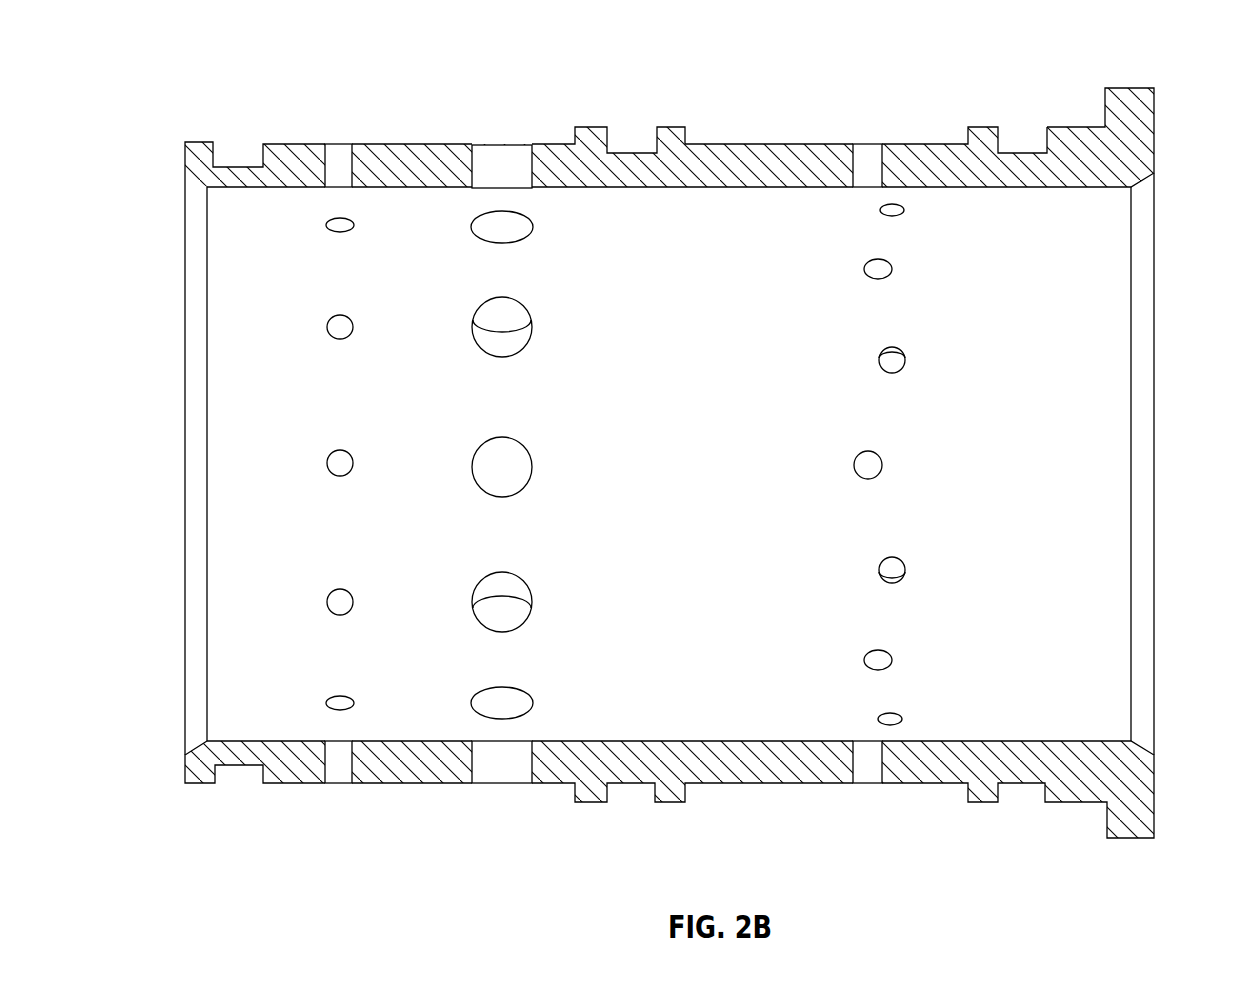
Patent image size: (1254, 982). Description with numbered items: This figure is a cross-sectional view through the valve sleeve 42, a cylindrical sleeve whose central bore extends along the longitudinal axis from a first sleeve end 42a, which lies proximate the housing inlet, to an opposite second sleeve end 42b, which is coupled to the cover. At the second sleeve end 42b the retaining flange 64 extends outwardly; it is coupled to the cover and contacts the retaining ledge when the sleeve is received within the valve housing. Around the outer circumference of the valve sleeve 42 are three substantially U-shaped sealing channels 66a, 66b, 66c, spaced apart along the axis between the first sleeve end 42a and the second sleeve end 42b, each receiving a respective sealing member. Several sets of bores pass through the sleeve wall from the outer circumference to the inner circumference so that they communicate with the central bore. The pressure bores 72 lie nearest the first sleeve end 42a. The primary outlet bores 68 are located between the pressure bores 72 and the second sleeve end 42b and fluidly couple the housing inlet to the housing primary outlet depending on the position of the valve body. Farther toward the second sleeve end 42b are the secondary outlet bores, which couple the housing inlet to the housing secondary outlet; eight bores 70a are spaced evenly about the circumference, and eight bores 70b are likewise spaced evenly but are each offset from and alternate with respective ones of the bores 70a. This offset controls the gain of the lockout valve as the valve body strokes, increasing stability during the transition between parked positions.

The valve sleeve 42 is at (233, 69).
The first sleeve end 42a is at (195, 766).
The second sleeve end 42b is at (1137, 795).
The retaining flange 64 is at (1135, 95).
The first sealing channel 66a is at (215, 153).
The second sealing channel 66b is at (609, 149).
The third sealing channel 66c is at (1002, 140).
The primary outlet bores 68 is at (490, 703).
The bores of the secondary outlet bores 70a is at (872, 158).
The offset bores of the secondary outlet bores 70b is at (905, 212).
The pressure bores 72 is at (335, 210).